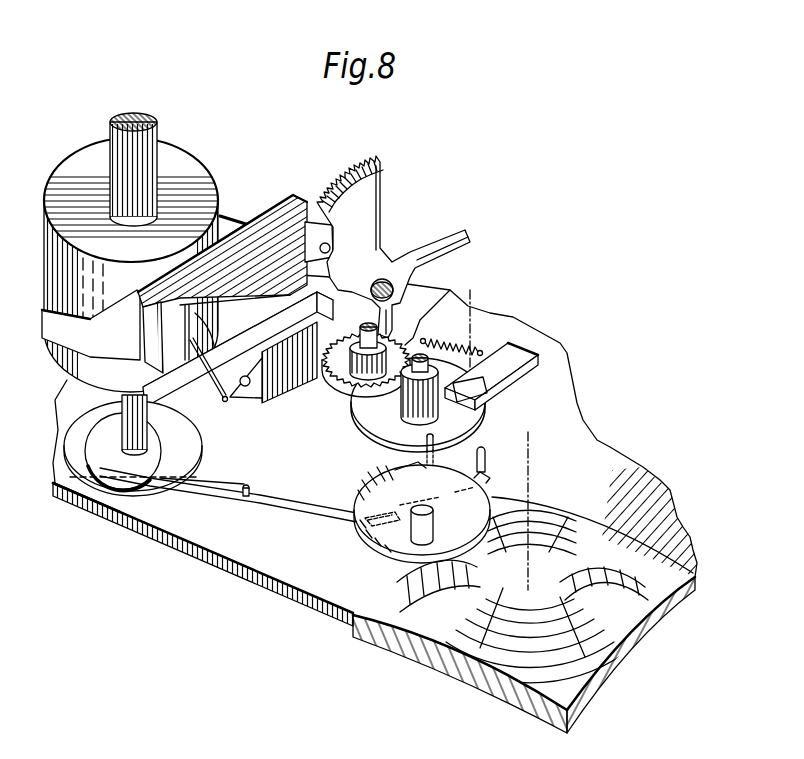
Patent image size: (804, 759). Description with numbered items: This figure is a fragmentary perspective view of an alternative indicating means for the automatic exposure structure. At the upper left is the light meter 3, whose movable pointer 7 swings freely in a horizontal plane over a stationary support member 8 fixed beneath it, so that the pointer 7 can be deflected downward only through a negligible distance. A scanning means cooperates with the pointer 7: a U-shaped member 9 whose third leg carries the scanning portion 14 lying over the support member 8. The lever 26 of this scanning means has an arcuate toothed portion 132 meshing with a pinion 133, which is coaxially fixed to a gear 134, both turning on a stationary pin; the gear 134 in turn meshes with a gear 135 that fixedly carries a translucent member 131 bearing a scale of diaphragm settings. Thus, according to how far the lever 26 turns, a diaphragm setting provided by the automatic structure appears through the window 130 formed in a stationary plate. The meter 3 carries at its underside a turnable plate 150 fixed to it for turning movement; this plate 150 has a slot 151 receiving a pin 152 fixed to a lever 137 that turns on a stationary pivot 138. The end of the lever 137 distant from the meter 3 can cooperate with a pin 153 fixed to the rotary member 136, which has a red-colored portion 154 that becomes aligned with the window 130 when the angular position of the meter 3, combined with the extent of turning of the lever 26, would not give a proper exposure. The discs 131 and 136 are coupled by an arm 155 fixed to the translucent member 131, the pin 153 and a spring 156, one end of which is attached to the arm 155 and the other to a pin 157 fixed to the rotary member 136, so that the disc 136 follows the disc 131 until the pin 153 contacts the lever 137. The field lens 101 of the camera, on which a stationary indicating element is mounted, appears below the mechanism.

The light meter 3 is at (182, 165).
The U-shaped member 9 is at (245, 205).
The scanning portion 14 is at (170, 273).
The lever 26 is at (360, 212).
The arm 155 is at (432, 297).
The spring 156 is at (472, 318).
The gear 135 is at (434, 378).
The window 130 is at (500, 383).
The arcuate toothed portion 132 is at (354, 340).
The pinion 133 is at (346, 381).
The gear 134 is at (350, 398).
The translucent member 131 is at (363, 437).
The support member 8 is at (182, 394).
The pointer 7 is at (226, 400).
The turnable plate 150 is at (73, 433).
The pin 152 is at (100, 462).
The slot 151 is at (60, 490).
The lever 137 is at (188, 494).
The stationary pivot 138 is at (248, 484).
The pin 153 is at (424, 462).
The pin 157 is at (486, 460).
The red-colored portion 154 is at (360, 526).
The rotary member 136 is at (400, 547).
The field lens 101 is at (598, 537).